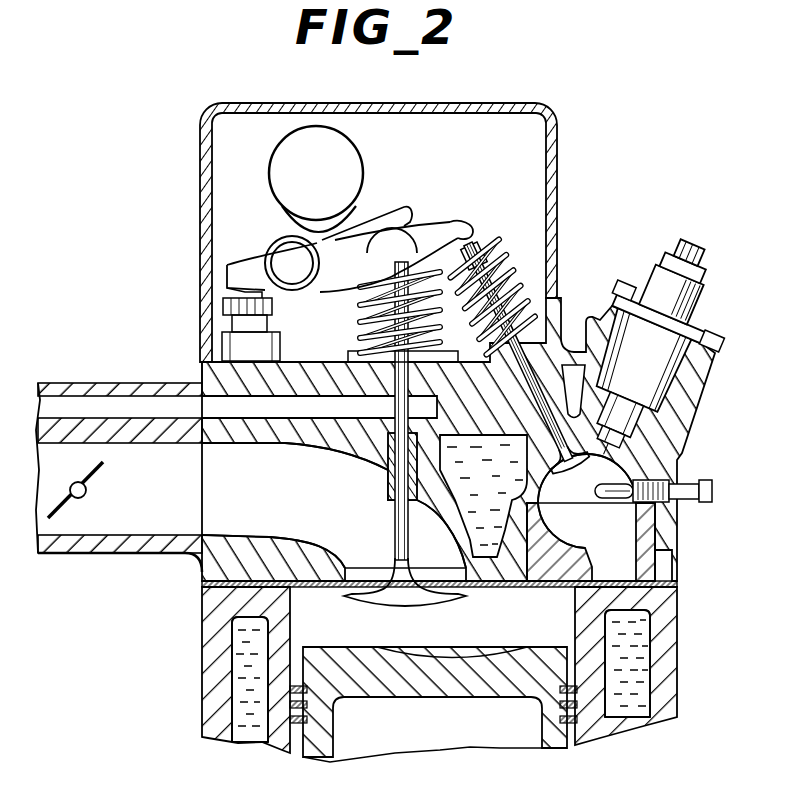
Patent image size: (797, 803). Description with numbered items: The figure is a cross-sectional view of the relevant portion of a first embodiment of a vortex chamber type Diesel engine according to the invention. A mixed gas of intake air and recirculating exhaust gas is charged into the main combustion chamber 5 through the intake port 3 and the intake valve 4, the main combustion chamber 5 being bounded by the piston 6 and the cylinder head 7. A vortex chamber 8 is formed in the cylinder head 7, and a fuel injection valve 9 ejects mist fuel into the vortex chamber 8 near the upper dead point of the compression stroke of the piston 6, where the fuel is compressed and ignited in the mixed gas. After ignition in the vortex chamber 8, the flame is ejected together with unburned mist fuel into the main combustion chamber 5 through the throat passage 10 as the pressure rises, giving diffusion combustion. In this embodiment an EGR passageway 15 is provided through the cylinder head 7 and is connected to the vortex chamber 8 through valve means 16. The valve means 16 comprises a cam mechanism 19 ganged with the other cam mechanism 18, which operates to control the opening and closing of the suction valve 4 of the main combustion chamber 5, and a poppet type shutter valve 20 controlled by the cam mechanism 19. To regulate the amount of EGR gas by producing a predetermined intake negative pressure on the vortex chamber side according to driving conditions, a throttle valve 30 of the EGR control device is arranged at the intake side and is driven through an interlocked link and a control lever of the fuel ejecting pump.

The intake port 3 is at (252, 500).
The intake valve 4 is at (345, 618).
The main combustion chamber 5 is at (612, 601).
The piston 6 is at (548, 668).
The cylinder head 7 is at (684, 400).
The vortex chamber 8 is at (603, 521).
The fuel injection valve 9 is at (652, 414).
The throat passage 10 is at (660, 562).
The EGR passageway 15 is at (197, 362).
The valve means 16 is at (612, 234).
The cam mechanism 18 is at (398, 208).
The cam mechanism 19 is at (469, 219).
The poppet type shutter valve 20 is at (630, 468).
The throttle valve 30 is at (80, 498).